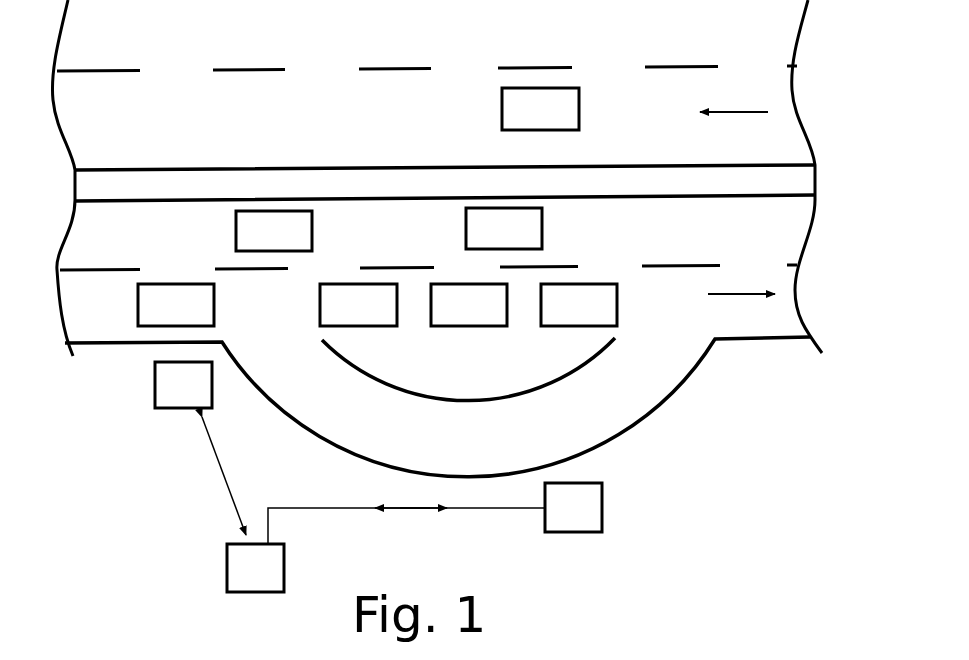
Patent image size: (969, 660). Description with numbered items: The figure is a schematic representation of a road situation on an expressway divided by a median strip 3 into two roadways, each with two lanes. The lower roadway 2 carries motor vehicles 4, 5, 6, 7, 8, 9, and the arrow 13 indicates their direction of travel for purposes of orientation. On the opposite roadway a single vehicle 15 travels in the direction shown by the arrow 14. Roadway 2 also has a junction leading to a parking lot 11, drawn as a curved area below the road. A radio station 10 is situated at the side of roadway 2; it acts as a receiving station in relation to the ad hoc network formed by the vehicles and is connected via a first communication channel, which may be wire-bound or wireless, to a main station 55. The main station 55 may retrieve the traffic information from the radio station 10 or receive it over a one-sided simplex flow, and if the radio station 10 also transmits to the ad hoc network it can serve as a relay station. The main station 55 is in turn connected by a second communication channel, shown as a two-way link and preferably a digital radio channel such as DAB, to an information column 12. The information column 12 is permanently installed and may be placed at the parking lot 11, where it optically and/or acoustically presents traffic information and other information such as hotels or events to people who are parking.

The roadway 2 is at (120, 343).
The median strip 3 is at (100, 185).
The motor vehicle 4 is at (166, 319).
The motor vehicle 5 is at (264, 246).
The motor vehicle 6 is at (348, 319).
The motor vehicle 7 is at (494, 243).
The motor vehicle 8 is at (459, 319).
The motor vehicle 9 is at (569, 319).
The radio station 10 is at (167, 402).
The parking lot 11 is at (595, 425).
The information column 12 is at (588, 510).
The arrow 13 is at (746, 293).
The arrow 14 is at (760, 112).
The vehicle 15 is at (529, 126).
The main station 55 is at (240, 558).